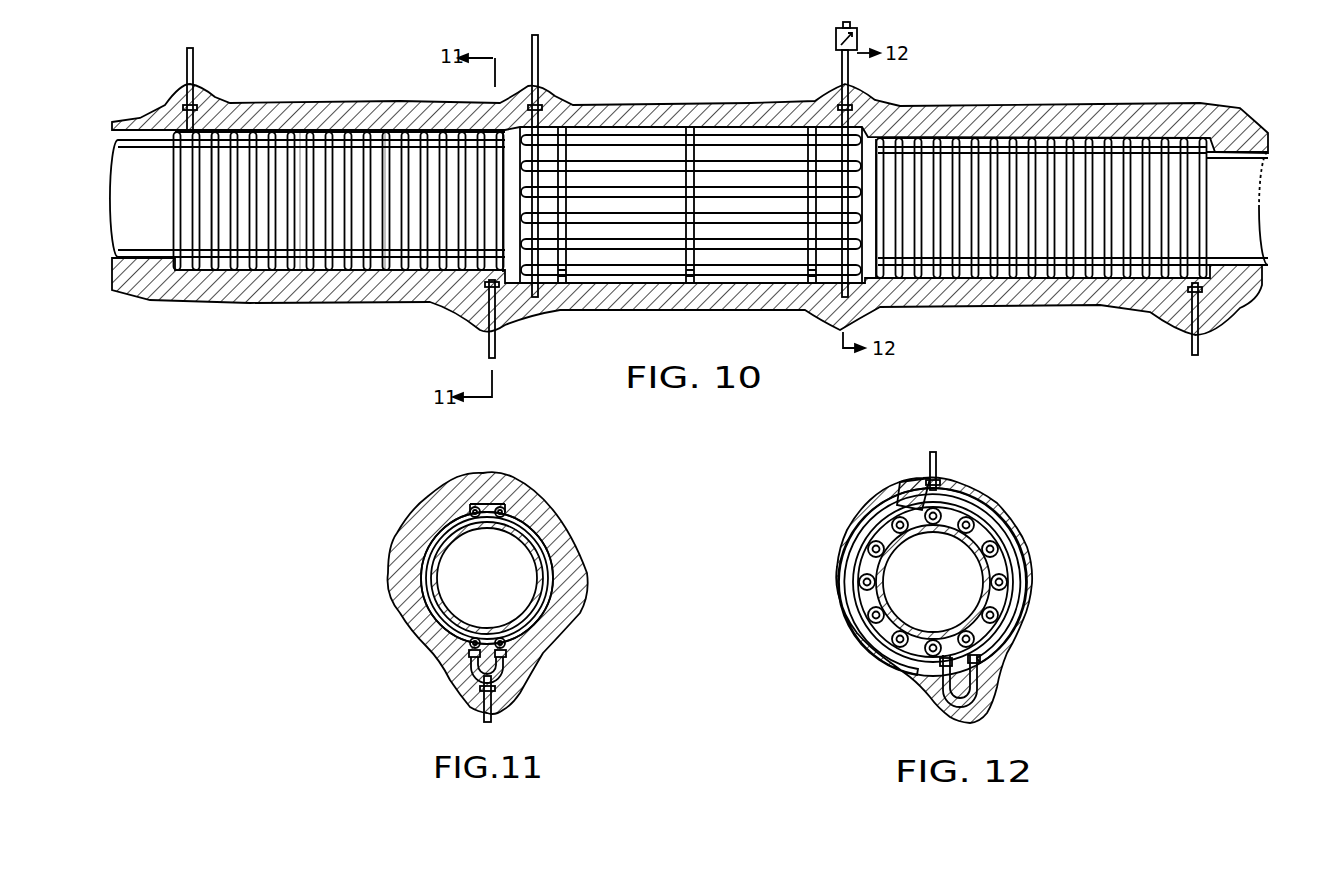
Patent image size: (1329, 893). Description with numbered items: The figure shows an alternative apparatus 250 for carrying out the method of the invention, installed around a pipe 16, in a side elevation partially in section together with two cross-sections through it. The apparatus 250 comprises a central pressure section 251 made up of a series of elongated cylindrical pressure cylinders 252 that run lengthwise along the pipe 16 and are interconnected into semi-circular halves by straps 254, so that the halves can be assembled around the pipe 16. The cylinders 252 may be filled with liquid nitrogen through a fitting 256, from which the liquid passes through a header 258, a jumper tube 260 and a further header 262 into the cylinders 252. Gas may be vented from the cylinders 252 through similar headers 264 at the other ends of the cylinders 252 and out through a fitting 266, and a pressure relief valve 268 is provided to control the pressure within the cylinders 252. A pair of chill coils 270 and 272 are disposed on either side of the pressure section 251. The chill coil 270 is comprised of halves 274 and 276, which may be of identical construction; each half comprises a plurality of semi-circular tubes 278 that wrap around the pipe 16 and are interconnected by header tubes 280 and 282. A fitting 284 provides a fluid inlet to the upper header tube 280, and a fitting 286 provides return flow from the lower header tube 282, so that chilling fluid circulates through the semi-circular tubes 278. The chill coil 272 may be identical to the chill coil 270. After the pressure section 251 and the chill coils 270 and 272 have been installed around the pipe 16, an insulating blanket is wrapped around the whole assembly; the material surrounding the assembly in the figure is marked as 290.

In FIG. 10, the pipe 16 is at (1262, 175).
In FIG. 11, the pipe 16 is at (487, 578).
In FIG. 12, the pipe 16 is at (933, 582).
In FIG. 10, the alternative apparatus 250 is at (685, 202).
In FIG. 11, the alternative apparatus 250 is at (460, 594).
In FIG. 12, the alternative apparatus 250 is at (926, 577).
In FIG. 10, the pressure section 251 is at (691, 224).
In FIG. 10, the pressure cylinders 252 is at (773, 160).
In FIG. 12, the pressure cylinders 252 is at (965, 533).
In FIG. 10, the straps 254 is at (645, 352).
In FIG. 10, the fitting 256 is at (540, 54).
In FIG. 12, the fitting 256 is at (963, 440).
In FIG. 12, the header 258 is at (1013, 568).
In FIG. 12, the jumper tube 260 is at (990, 700).
In FIG. 12, the header 262 is at (848, 602).
In FIG. 10, the headers 264 is at (866, 290).
In FIG. 10, the fitting 266 is at (839, 53).
In FIG. 10, the pressure relief valve 268 is at (860, 38).
In FIG. 10, the chill coil 270 is at (287, 273).
In FIG. 10, the chill coil 272 is at (975, 278).
In FIG. 11, the half 274 is at (418, 613).
In FIG. 11, the half 276 is at (550, 533).
In FIG. 10, the semi-circular tubes 278 is at (391, 270).
In FIG. 11, the semi-circular tubes 278 is at (545, 612).
In FIG. 11, the header tube 280 is at (472, 506).
In FIG. 10, the header tube 282 is at (300, 130).
In FIG. 11, the header tube 282 is at (470, 648).
In FIG. 10, the fitting 284 is at (194, 64).
In FIG. 11, the fitting 286 is at (492, 718).
In FIG. 10, the backfill 290 is at (1105, 108).